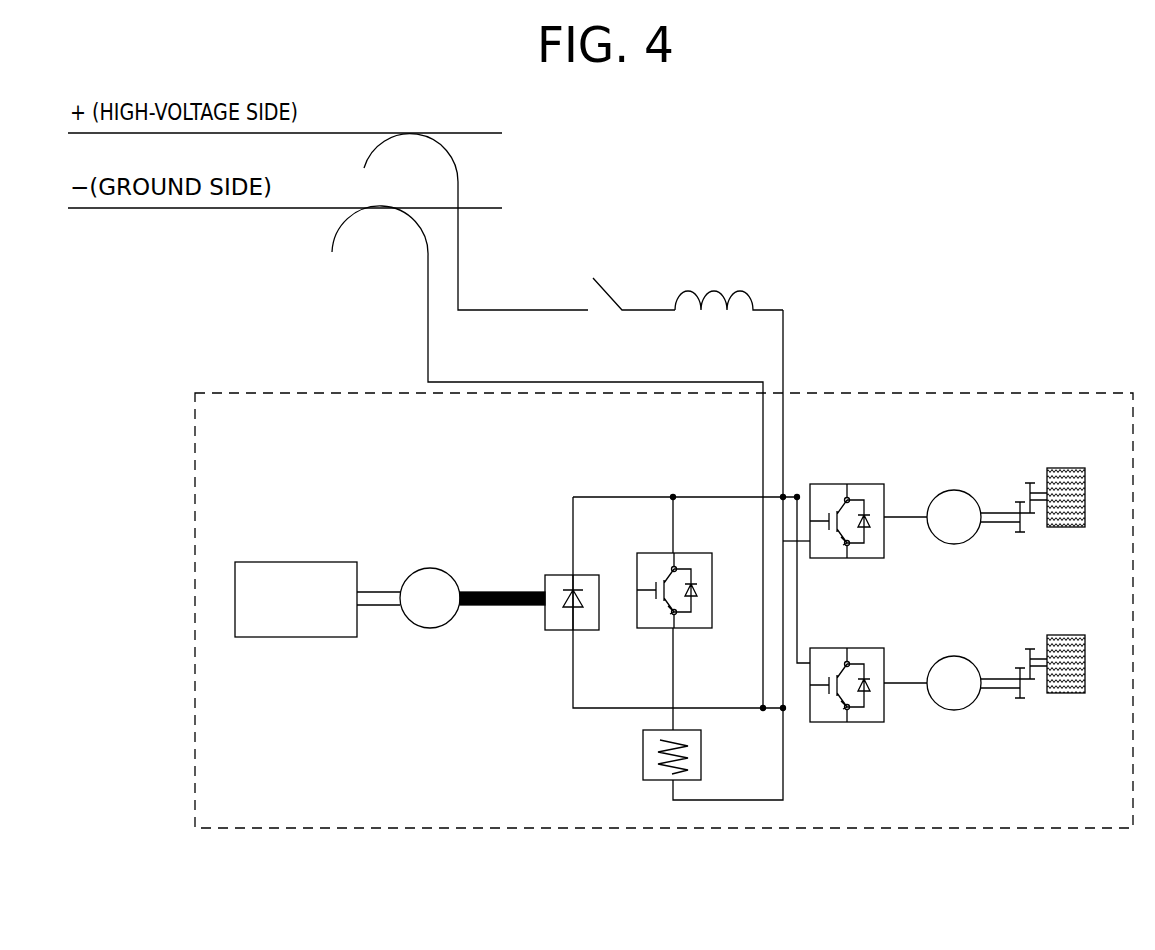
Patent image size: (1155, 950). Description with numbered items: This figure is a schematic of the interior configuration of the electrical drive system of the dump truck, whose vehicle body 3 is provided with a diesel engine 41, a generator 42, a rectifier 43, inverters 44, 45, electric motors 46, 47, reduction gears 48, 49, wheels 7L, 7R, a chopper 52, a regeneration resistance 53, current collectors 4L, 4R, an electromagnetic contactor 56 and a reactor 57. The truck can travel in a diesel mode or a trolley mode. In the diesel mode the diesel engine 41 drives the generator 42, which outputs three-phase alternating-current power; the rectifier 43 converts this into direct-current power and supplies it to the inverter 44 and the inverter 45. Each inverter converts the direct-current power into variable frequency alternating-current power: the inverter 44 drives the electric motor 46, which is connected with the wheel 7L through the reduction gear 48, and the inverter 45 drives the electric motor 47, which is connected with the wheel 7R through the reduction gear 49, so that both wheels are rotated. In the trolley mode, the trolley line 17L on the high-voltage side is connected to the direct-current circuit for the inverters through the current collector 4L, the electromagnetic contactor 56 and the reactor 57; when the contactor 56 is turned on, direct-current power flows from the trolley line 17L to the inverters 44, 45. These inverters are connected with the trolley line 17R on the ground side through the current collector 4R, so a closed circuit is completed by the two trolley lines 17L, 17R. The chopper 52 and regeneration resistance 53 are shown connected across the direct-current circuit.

The vehicle body 3 is at (195, 550).
The current collector 4L is at (440, 148).
The current collector 4R is at (405, 218).
The trolley line 17L is at (368, 132).
The trolley line 17R is at (250, 210).
The diesel engine 41 is at (343, 570).
The generator 42 is at (433, 575).
The rectifier 43 is at (583, 585).
The inverter 44 is at (865, 490).
The inverter 45 is at (868, 650).
The electric motor 46 is at (954, 496).
The electric motor 47 is at (954, 662).
The reduction gear 48 is at (1028, 481).
The reduction gear 49 is at (1028, 647).
The chopper 52 is at (703, 582).
The regeneration resistance 53 is at (692, 740).
The electromagnetic contactor 56 is at (608, 287).
The reactor 57 is at (742, 290).
The wheel 7L is at (1078, 468).
The wheel 7R is at (1078, 635).